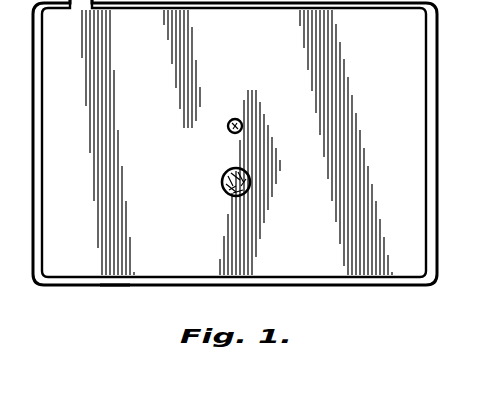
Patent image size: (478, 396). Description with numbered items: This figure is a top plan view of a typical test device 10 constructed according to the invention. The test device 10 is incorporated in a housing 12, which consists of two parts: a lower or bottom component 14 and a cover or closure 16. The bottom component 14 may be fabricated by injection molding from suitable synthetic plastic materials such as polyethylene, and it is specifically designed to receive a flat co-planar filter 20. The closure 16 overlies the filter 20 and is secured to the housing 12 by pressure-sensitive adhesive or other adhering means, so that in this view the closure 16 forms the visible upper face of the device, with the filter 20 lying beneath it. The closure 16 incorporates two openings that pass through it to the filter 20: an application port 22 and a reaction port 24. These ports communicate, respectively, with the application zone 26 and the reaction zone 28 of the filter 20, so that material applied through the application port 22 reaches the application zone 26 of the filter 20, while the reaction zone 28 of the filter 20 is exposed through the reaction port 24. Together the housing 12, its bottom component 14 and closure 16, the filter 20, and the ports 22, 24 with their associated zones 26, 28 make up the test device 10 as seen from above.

The test device 10 is at (365, 295).
The housing 12 is at (160, 285).
The bottom component 14 is at (113, 286).
The closure 16 is at (183, 250).
The filter 20 is at (222, 178).
The application port 22 is at (247, 192).
The reaction port 24 is at (242, 123).
The application zone 26 is at (223, 189).
The reaction zone 28 is at (229, 131).